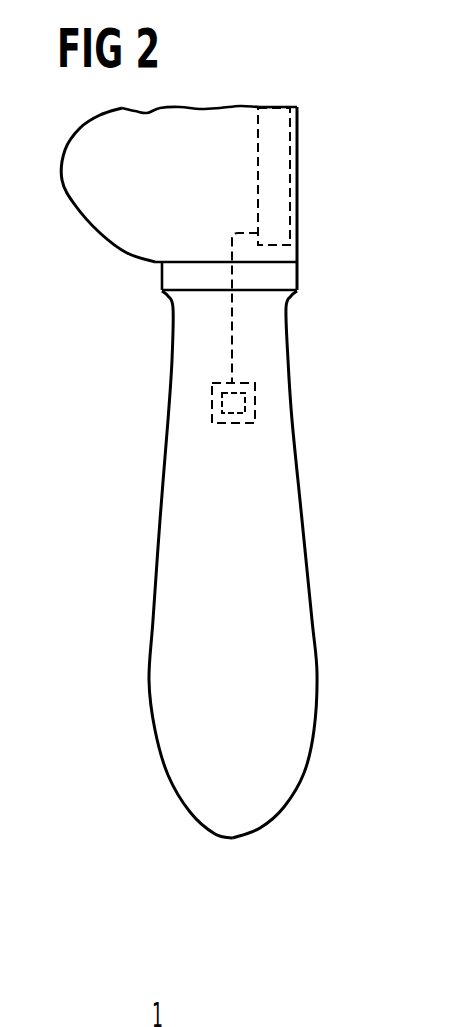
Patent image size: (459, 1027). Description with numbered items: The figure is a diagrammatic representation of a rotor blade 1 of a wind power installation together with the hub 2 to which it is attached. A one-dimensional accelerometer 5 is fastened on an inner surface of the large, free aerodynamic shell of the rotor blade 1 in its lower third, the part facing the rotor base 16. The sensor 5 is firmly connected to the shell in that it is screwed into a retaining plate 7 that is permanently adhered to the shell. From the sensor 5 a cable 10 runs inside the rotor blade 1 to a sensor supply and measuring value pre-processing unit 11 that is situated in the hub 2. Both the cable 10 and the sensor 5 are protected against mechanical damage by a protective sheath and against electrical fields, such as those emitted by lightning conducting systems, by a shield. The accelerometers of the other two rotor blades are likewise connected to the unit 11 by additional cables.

The rotor blade 1 is at (273, 777).
The hub 2 is at (117, 225).
The one-dimensional accelerometer 5 is at (250, 400).
The retaining plate 7 is at (253, 407).
The cable 10 is at (232, 335).
The sensor supply and measuring value pre-processing unit 11 is at (273, 146).
The rotor base 16 is at (290, 278).